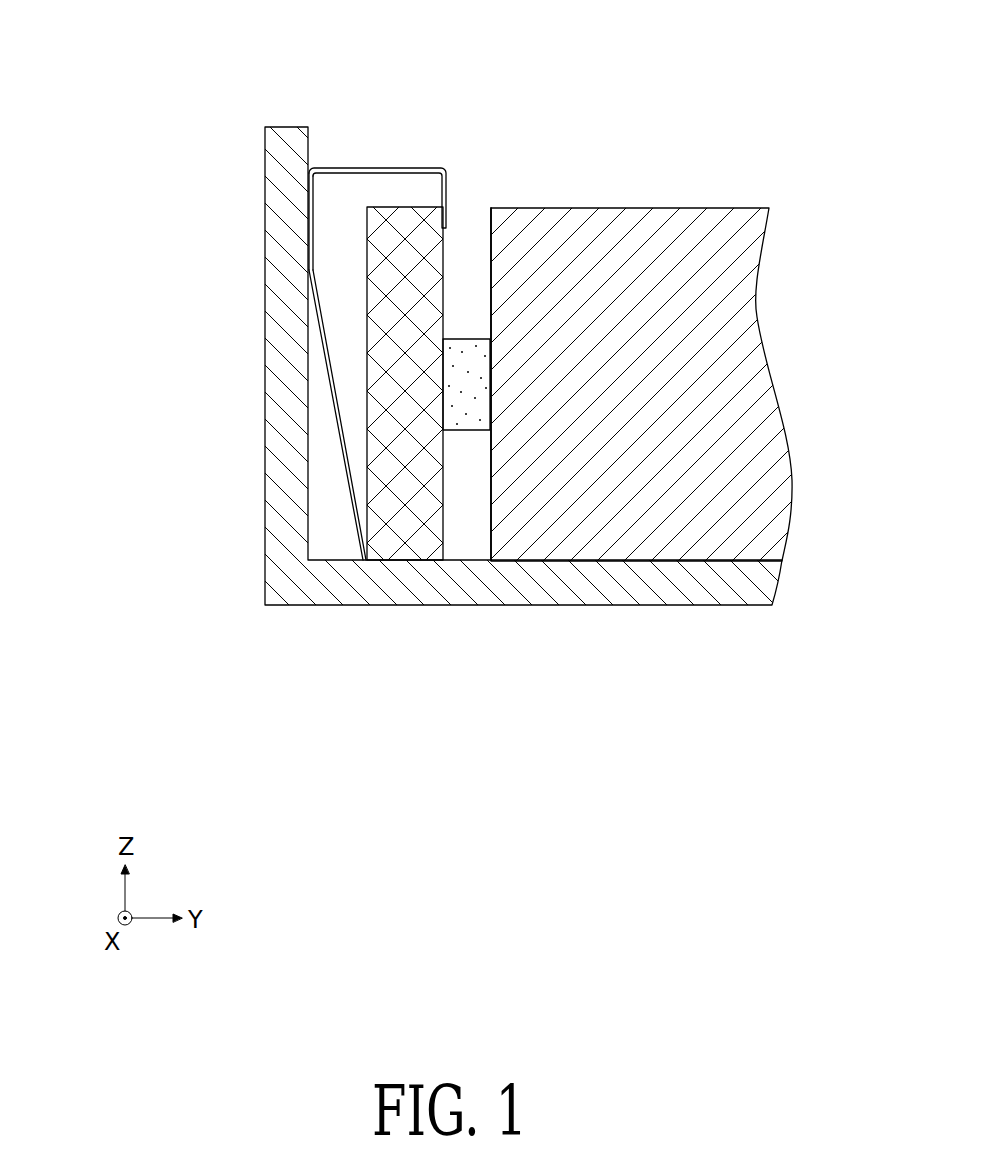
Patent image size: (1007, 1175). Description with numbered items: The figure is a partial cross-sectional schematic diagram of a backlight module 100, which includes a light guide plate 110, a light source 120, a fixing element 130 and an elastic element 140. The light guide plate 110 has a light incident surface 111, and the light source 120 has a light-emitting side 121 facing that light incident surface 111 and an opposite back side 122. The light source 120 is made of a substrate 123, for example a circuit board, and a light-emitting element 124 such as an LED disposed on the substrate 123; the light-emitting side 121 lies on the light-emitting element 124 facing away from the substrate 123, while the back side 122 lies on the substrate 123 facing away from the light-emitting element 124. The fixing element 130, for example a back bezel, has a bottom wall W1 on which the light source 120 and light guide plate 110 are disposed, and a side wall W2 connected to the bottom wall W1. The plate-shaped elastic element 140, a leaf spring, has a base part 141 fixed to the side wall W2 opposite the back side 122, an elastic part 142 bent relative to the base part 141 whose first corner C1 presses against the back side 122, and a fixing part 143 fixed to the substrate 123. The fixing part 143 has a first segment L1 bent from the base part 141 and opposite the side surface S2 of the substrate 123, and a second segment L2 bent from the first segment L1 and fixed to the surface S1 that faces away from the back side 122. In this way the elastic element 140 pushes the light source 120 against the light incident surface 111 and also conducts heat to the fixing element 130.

The backlight module 100 is at (158, 72).
The light guide plate 110 is at (652, 227).
The light incident surface 111 is at (492, 220).
The light source 120 is at (405, 526).
The light-emitting side 121 is at (491, 399).
The back side 122 is at (368, 355).
The substrate 123 is at (407, 528).
The light-emitting element 124 is at (468, 408).
The fixing element 130 is at (264, 500).
The elastic element 140 is at (317, 283).
The base part 141 is at (308, 232).
The elastic part 142 is at (340, 428).
The fixing part 143 is at (455, 52).
The first segment L1 is at (404, 172).
The second segment L2 is at (428, 196).
The surface S1 is at (449, 232).
The side surface S2 is at (397, 198).
The bottom wall W1 is at (614, 587).
The side wall W2 is at (278, 305).
The first corner C1 is at (365, 560).